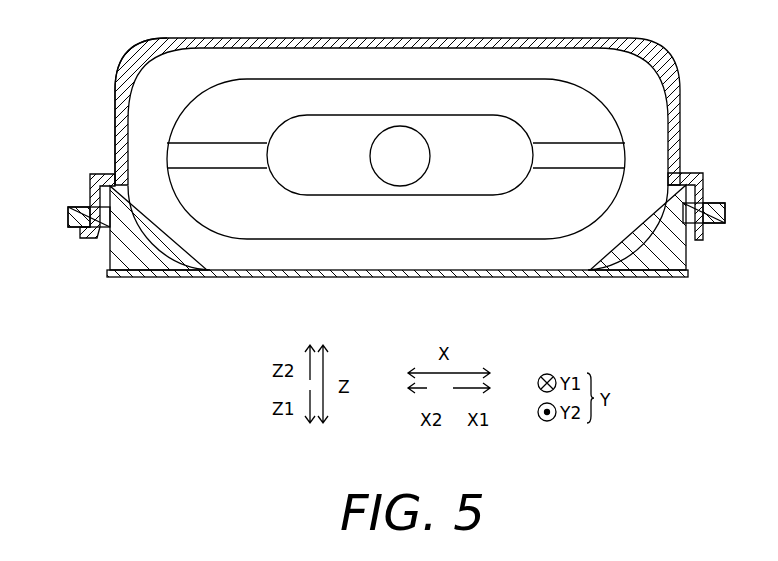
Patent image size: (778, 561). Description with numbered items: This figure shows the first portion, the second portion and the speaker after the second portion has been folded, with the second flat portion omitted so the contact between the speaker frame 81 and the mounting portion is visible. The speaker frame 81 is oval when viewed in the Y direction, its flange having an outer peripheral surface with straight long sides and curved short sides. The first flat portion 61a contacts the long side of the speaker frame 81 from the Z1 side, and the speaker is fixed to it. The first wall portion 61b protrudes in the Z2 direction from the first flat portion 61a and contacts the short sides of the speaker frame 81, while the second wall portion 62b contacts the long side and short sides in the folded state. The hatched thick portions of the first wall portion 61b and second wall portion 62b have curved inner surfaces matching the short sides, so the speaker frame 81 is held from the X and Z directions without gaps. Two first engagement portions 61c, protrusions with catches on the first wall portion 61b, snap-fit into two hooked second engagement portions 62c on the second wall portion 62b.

The speaker frame 81 is at (658, 128).
The second wall portion 62b is at (117, 68).
The second engagement portion 62c is at (90, 176).
The first engagement portion 61c is at (68, 218).
The first wall portion 61b is at (688, 266).
The first flat portion 61a is at (413, 277).